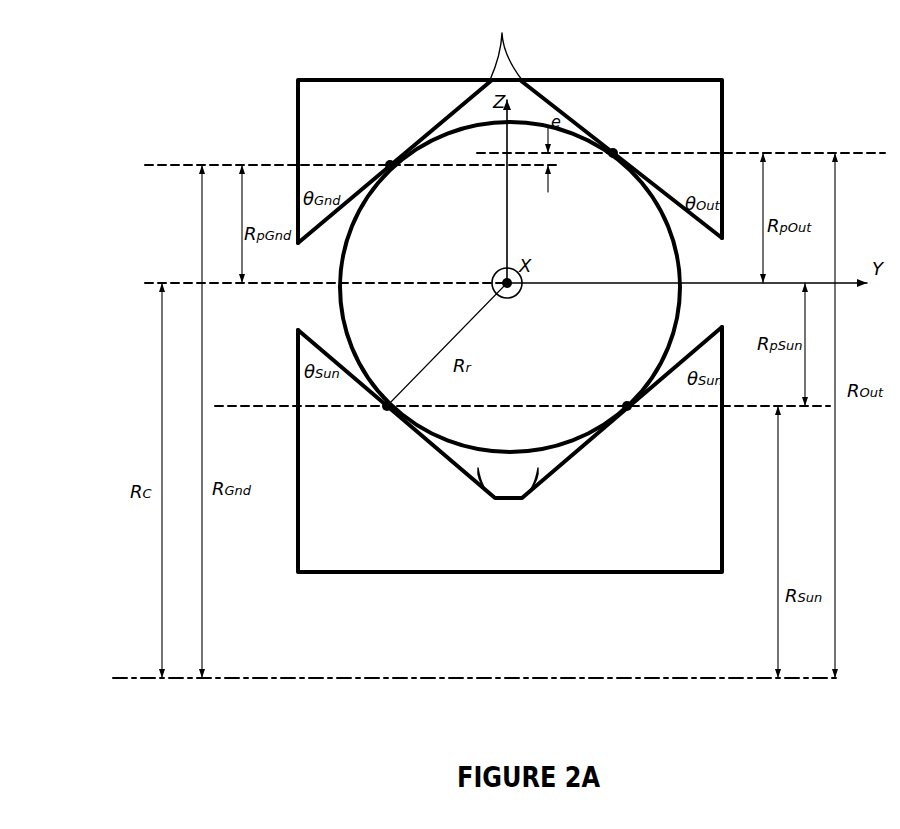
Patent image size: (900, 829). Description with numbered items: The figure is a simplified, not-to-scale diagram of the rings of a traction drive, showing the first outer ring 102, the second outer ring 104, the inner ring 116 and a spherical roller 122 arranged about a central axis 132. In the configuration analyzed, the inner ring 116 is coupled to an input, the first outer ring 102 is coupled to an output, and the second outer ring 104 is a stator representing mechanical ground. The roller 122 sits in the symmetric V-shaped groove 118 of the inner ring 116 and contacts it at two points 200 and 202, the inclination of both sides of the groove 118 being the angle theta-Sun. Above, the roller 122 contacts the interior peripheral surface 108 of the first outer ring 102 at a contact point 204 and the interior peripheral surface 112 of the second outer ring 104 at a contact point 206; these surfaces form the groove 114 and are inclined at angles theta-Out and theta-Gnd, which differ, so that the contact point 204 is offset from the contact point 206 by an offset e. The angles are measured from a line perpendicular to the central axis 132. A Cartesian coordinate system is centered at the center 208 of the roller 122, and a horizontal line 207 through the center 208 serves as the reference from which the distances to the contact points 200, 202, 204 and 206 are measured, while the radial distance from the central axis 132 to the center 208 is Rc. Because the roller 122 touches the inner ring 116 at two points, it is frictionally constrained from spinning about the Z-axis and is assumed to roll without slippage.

The first outer ring 102 is at (680, 97).
The second outer ring 104 is at (322, 93).
The interior peripheral surface 108 is at (530, 103).
The interior peripheral surface 112 is at (457, 124).
The groove 114 is at (502, 33).
The inner ring 116 is at (712, 512).
The V-shaped groove 118 is at (519, 499).
The roller 122 is at (660, 323).
The central axis 132 is at (150, 678).
The contact point 200 is at (383, 411).
The contact point 202 is at (634, 406).
The contact point 204 is at (616, 149).
The contact point 206 is at (389, 161).
The horizontal line 207 is at (560, 274).
The center 208 is at (502, 276).